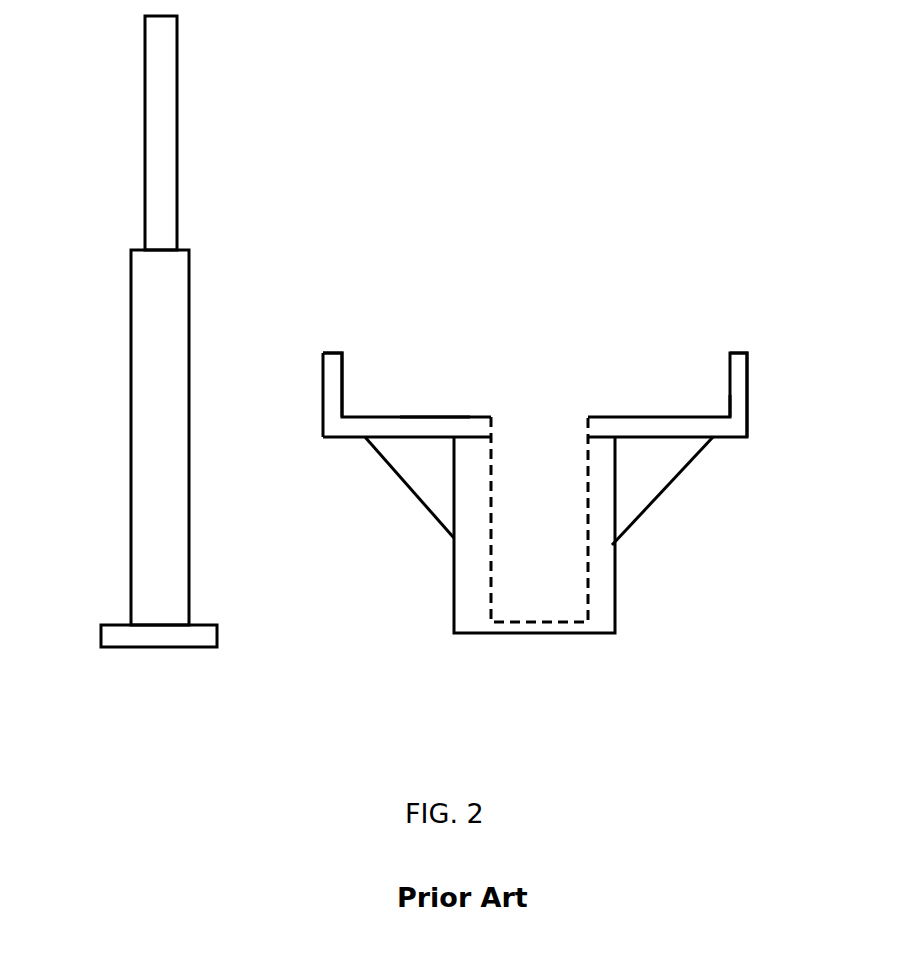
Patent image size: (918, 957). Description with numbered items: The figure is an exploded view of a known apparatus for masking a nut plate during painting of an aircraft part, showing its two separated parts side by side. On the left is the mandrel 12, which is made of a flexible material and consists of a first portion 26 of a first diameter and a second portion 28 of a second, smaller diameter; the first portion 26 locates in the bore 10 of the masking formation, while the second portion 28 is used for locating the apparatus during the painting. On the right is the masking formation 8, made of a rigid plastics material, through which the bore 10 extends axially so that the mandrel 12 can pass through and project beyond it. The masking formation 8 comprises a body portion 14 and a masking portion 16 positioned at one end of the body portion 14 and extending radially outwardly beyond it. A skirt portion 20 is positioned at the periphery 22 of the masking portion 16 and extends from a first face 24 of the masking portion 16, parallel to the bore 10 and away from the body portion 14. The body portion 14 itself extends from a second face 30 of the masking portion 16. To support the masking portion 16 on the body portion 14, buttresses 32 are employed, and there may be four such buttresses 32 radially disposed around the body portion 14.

The masking formation 8 is at (576, 501).
The bore 10 is at (548, 577).
The mandrel 12 is at (150, 331).
The body portion 14 is at (615, 568).
The masking portion 16 is at (733, 427).
The skirt portion 20 is at (747, 379).
The periphery 22 is at (735, 403).
The first face 24 is at (432, 417).
The first portion 26 is at (171, 504).
The second portion 28 is at (161, 146).
The second face 30 is at (341, 437).
The buttresses 32 is at (539, 491).